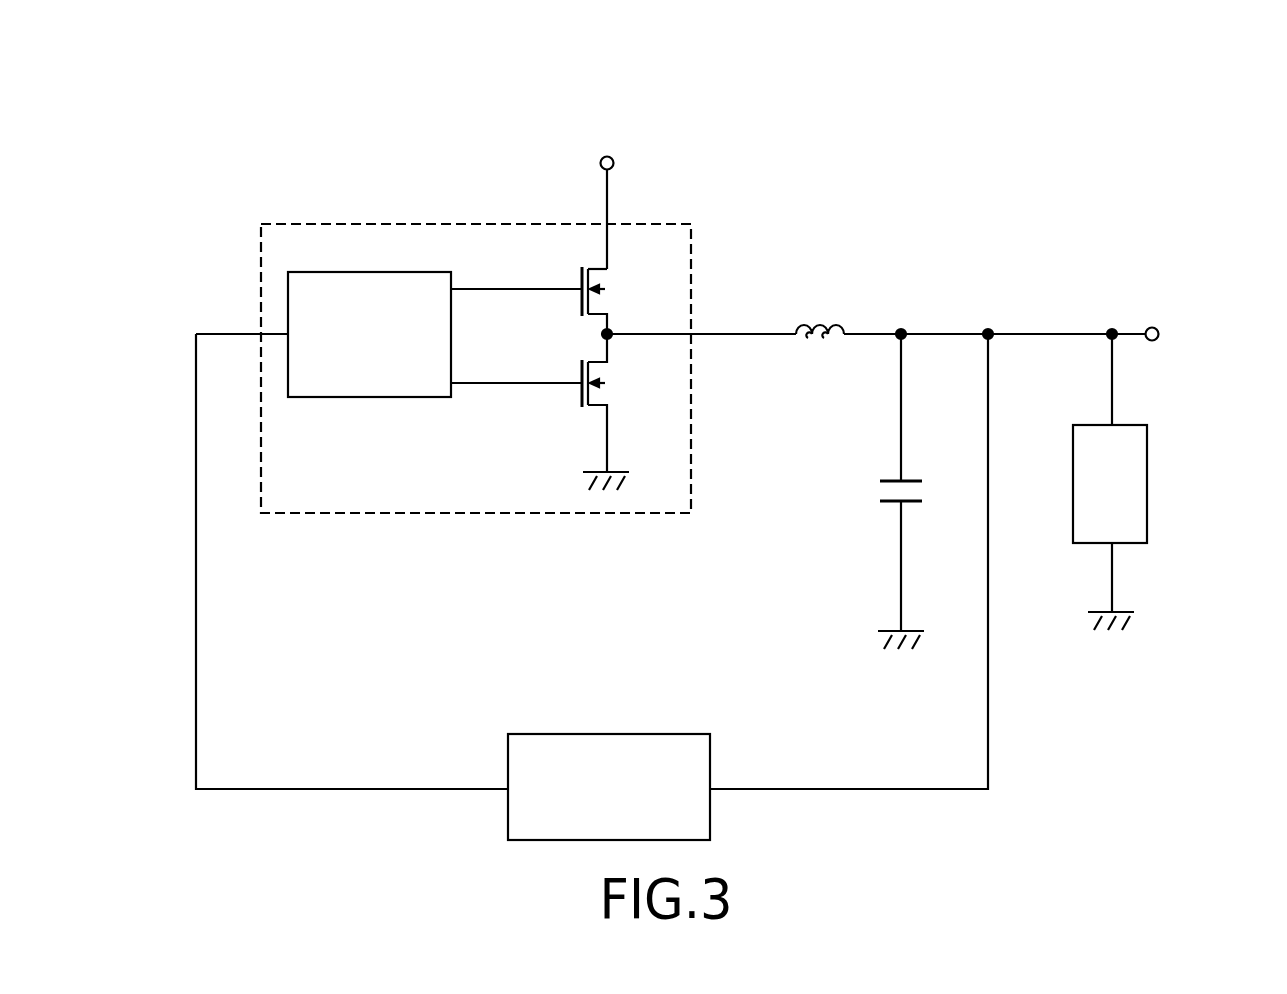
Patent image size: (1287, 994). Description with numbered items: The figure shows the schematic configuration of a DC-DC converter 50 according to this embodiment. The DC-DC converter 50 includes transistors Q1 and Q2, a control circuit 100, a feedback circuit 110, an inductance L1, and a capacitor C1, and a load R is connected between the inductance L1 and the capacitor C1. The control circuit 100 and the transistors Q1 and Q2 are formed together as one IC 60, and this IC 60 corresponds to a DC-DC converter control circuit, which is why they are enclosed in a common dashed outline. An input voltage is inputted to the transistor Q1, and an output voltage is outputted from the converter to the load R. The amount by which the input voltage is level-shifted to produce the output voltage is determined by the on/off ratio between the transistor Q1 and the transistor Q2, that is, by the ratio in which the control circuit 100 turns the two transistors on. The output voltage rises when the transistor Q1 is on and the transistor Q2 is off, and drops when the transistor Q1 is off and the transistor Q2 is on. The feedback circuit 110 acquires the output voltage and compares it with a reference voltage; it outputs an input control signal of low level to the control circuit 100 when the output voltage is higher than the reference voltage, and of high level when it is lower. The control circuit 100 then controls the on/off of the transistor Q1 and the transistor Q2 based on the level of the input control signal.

The DC-DC converter 50 is at (694, 116).
The IC 60 is at (436, 513).
The control circuit 100 is at (376, 398).
The feedback circuit 110 is at (625, 734).
The transistor Q1 is at (553, 300).
The transistor Q2 is at (553, 412).
The inductance L1 is at (820, 315).
The capacitor C1 is at (880, 491).
The load R is at (1149, 480).